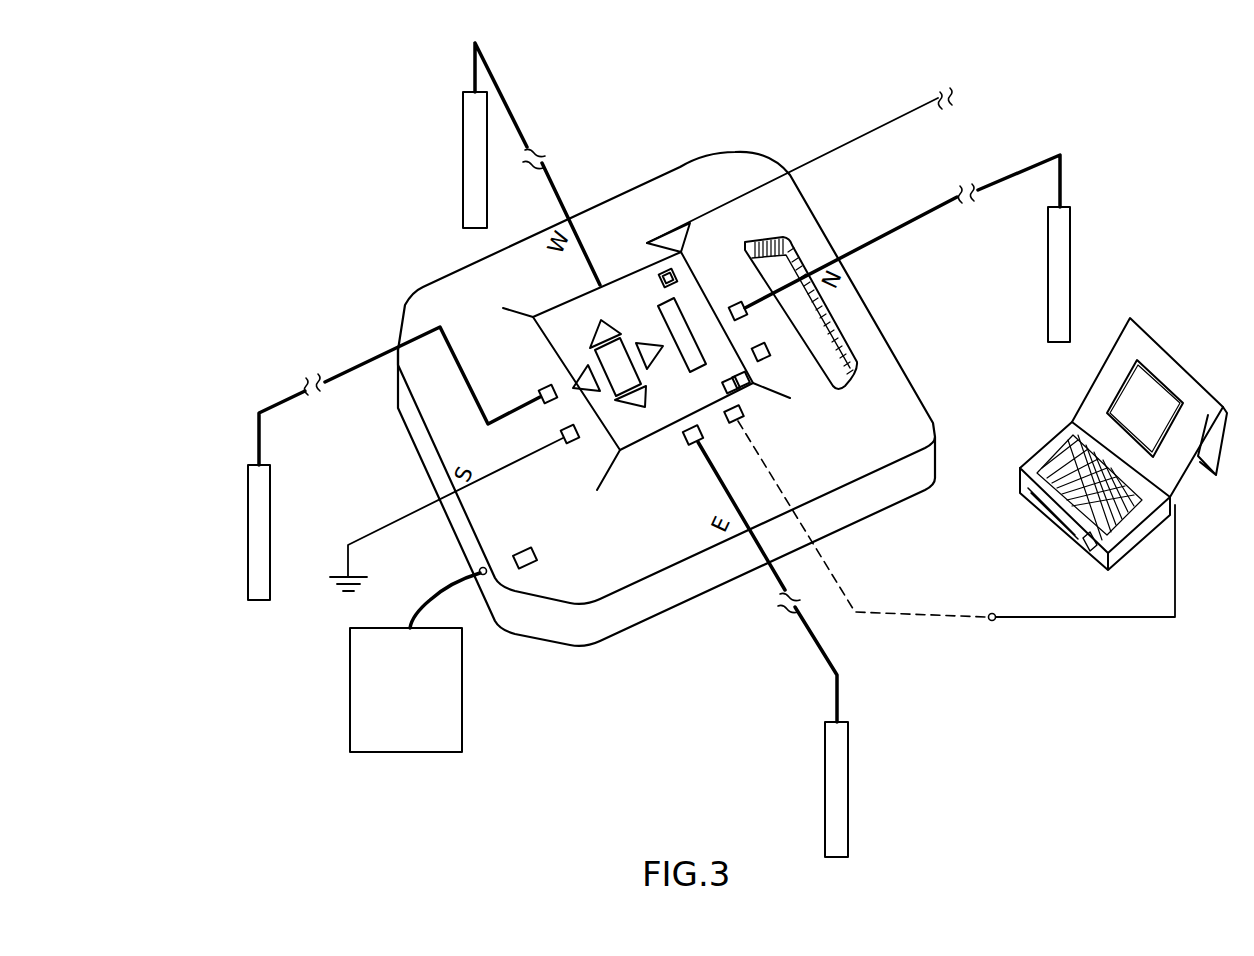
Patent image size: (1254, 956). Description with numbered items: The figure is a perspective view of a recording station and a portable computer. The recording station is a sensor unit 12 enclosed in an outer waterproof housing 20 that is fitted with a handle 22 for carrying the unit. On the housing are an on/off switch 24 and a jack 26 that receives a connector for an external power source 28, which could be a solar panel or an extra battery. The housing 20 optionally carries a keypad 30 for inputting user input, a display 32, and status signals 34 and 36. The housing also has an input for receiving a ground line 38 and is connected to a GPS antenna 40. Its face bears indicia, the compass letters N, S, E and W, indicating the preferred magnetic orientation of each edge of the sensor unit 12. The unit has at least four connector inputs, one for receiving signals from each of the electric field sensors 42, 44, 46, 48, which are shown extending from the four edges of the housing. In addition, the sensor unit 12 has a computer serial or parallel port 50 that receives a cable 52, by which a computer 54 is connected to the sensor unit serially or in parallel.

The sensor unit 12 is at (893, 503).
The outer waterproof housing 20 is at (920, 418).
The handle 22 is at (837, 362).
The on/off switch 24 is at (518, 547).
The jack 26 is at (486, 580).
The external power source 28 is at (462, 698).
The keypad 30 is at (617, 398).
The display 32 is at (678, 352).
The status signal 34 is at (750, 378).
The status signal 36 is at (683, 272).
The ground line 38 is at (421, 509).
The GPS antenna 40 is at (857, 141).
The electric field sensor 42 is at (849, 784).
The electric field sensor 44 is at (1071, 251).
The electric field sensor 46 is at (462, 158).
The electric field sensor 48 is at (271, 519).
The computer serial or parallel port 50 is at (748, 413).
The cable 52 is at (1114, 620).
The computer 54 is at (1156, 540).